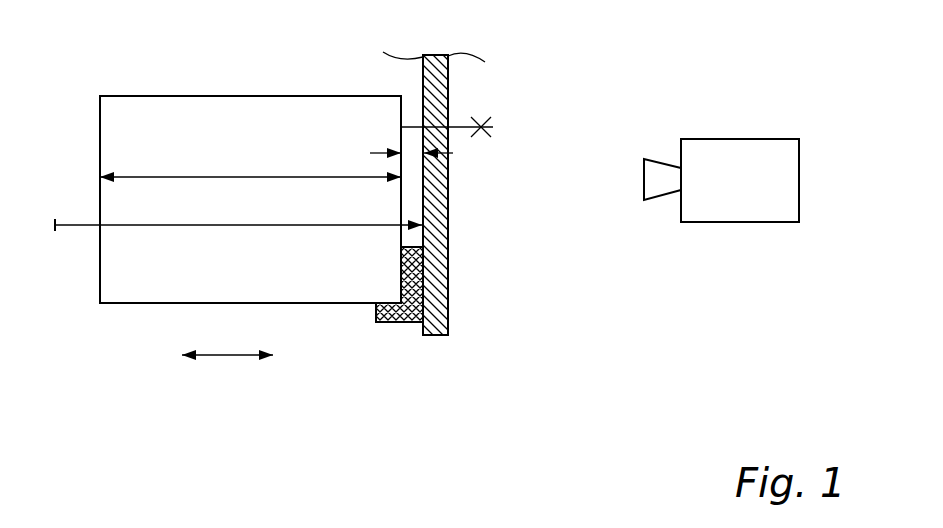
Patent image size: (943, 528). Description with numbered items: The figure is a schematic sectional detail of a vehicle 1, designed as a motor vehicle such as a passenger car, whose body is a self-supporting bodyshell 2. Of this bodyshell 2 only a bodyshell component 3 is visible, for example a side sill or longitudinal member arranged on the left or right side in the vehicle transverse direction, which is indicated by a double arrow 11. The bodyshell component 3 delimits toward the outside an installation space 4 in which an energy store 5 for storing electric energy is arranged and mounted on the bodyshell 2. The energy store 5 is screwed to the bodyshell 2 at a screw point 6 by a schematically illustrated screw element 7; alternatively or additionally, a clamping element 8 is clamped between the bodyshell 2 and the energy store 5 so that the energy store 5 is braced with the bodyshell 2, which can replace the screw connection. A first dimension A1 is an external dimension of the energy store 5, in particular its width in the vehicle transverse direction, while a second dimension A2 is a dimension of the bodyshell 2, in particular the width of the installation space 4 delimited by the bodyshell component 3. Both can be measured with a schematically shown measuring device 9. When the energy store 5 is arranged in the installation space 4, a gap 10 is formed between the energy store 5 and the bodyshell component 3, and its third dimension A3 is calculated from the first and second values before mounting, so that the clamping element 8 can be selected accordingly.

The vehicle 1 is at (91, 305).
The bodyshell 2 is at (444, 345).
The bodyshell component 3 is at (437, 190).
The installation space 4 is at (66, 237).
The energy store 5 is at (220, 89).
The screw point 6 is at (522, 89).
The screw element 7 is at (458, 128).
The clamping element 8 is at (392, 323).
The measuring device 9 is at (770, 134).
The gap 10 is at (410, 188).
The double arrow 11 is at (227, 357).
The first dimension A1 is at (205, 177).
The second dimension A2 is at (214, 226).
The third dimension A3 is at (401, 150).